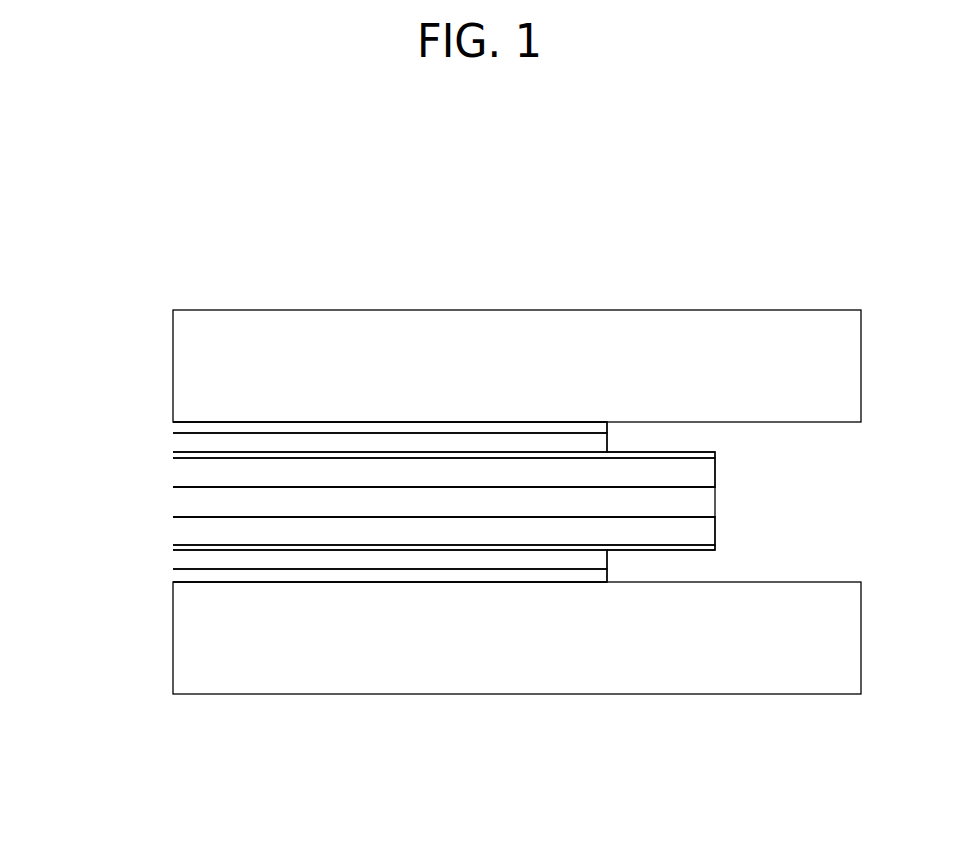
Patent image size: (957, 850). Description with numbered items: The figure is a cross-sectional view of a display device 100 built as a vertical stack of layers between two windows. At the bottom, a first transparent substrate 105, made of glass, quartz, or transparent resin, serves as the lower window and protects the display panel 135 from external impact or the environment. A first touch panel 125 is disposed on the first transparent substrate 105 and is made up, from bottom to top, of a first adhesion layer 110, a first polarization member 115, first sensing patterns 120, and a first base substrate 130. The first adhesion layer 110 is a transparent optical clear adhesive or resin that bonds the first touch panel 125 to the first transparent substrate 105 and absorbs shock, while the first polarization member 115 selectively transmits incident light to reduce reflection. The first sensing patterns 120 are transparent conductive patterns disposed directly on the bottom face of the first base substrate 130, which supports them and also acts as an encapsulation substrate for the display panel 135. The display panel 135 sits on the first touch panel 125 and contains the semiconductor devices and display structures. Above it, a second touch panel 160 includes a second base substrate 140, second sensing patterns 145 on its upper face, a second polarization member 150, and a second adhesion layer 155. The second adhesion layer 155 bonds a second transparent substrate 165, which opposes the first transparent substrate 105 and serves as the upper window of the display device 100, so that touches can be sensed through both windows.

The display device 100 is at (530, 244).
The first transparent substrate 105 is at (173, 634).
The first adhesion layer 110 is at (173, 574).
The first polarization member 115 is at (173, 558).
The first sensing patterns 120 is at (173, 547).
The first touch panel 125 is at (93, 517).
The first base substrate 130 is at (173, 523).
The display panel 135 is at (173, 502).
The second base substrate 140 is at (173, 477).
The second sensing patterns 145 is at (173, 455).
The second polarization member 150 is at (173, 444).
The second adhesion layer 155 is at (173, 427).
The second touch panel 160 is at (93, 398).
The second transparent substrate 165 is at (173, 362).